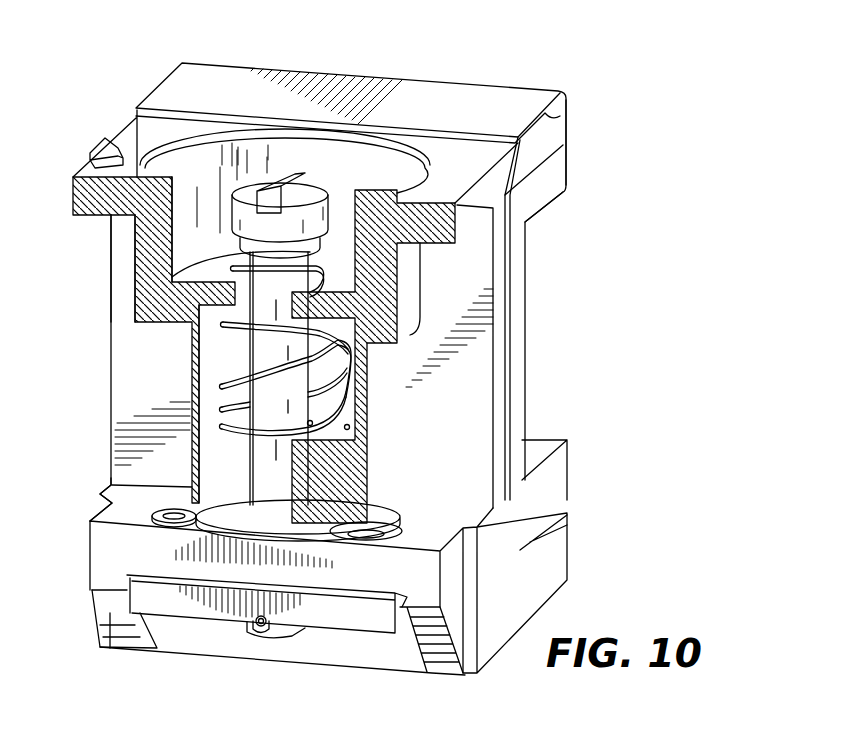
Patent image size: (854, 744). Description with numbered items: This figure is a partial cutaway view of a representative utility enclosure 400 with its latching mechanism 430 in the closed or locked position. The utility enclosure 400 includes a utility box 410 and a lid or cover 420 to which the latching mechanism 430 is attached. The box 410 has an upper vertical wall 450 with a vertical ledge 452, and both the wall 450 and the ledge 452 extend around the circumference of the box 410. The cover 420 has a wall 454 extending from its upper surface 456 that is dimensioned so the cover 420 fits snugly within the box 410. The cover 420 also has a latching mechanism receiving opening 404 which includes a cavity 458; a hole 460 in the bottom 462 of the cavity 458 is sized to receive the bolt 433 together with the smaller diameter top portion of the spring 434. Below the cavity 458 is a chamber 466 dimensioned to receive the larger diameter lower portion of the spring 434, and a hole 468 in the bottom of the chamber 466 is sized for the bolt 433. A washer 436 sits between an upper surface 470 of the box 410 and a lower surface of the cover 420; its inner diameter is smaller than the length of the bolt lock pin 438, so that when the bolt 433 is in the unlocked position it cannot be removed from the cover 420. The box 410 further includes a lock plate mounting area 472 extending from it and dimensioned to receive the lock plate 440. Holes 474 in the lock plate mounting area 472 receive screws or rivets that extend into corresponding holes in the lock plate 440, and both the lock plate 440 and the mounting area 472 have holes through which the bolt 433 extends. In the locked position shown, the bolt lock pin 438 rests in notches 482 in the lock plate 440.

The utility enclosure 400 is at (692, 117).
The latching mechanism receiving opening 404 is at (227, 140).
The utility box 410 is at (560, 473).
The cover 420 is at (520, 102).
The latching mechanism 430 is at (195, 348).
The bolt 433 is at (300, 357).
The spring 434 is at (340, 386).
The washer 436 is at (190, 493).
The bolt lock pin 438 is at (262, 628).
The lock plate 440 is at (330, 616).
The upper vertical wall 450 is at (517, 325).
The vertical ledge 452 is at (550, 170).
The wall 454 is at (522, 275).
The upper surface 456 is at (537, 121).
The cavity 458 is at (172, 178).
The hole 460 is at (308, 272).
The bottom 462 is at (195, 270).
The chamber 466 is at (207, 358).
The hole 468 is at (242, 465).
The upper surface 470 is at (437, 532).
The lock plate mounting area 472 is at (430, 578).
The holes 474 is at (165, 532).
The notches 482 is at (250, 612).